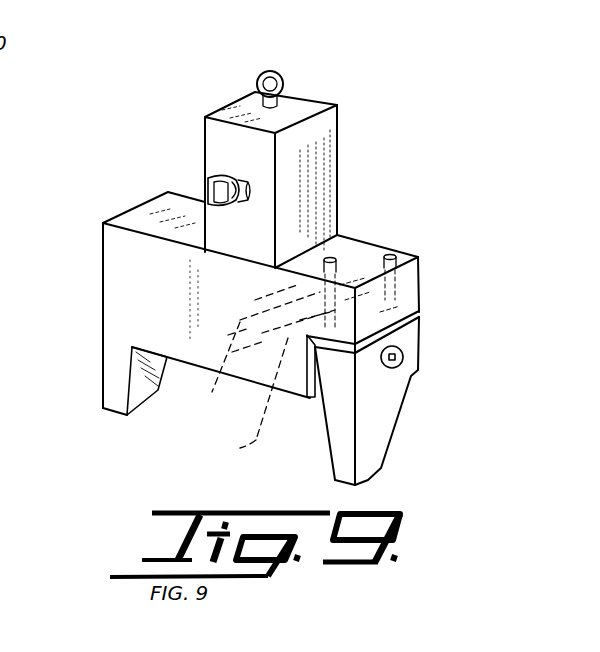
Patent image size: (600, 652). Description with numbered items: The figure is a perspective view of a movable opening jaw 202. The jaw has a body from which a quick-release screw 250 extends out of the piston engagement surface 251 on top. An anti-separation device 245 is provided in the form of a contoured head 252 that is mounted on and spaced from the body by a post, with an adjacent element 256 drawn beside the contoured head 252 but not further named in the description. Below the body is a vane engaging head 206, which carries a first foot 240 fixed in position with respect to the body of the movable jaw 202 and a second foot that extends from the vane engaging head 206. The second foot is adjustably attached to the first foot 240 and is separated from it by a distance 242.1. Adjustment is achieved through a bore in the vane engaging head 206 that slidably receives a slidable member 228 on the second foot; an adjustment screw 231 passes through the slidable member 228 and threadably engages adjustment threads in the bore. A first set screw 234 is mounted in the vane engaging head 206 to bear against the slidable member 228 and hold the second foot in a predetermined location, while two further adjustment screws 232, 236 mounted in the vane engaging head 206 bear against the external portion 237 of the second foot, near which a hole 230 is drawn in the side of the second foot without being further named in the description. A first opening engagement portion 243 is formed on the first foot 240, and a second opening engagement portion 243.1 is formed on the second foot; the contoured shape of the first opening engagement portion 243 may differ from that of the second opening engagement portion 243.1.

The movable jaw 202 is at (318, 188).
The vane engaging head 206 is at (183, 291).
The slidable member 228 is at (330, 476).
The hole 230 is at (395, 368).
The adjustment screw 231 is at (221, 384).
The adjustment screw 232 is at (313, 237).
The first set screw 234 is at (395, 252).
The adjustment screw 236 is at (428, 271).
The external portion 237 is at (420, 313).
The first foot 240 is at (117, 382).
The distance 242.1 is at (166, 427).
The first opening engagement portion 243 is at (104, 410).
The second opening engagement portion 243.1 is at (368, 481).
The anti-separation device 245 is at (194, 160).
The quick-release screw 250 is at (270, 71).
The piston engagement surface 251 is at (300, 107).
The contoured head 252 is at (205, 184).
The knob flange 256 is at (250, 190).